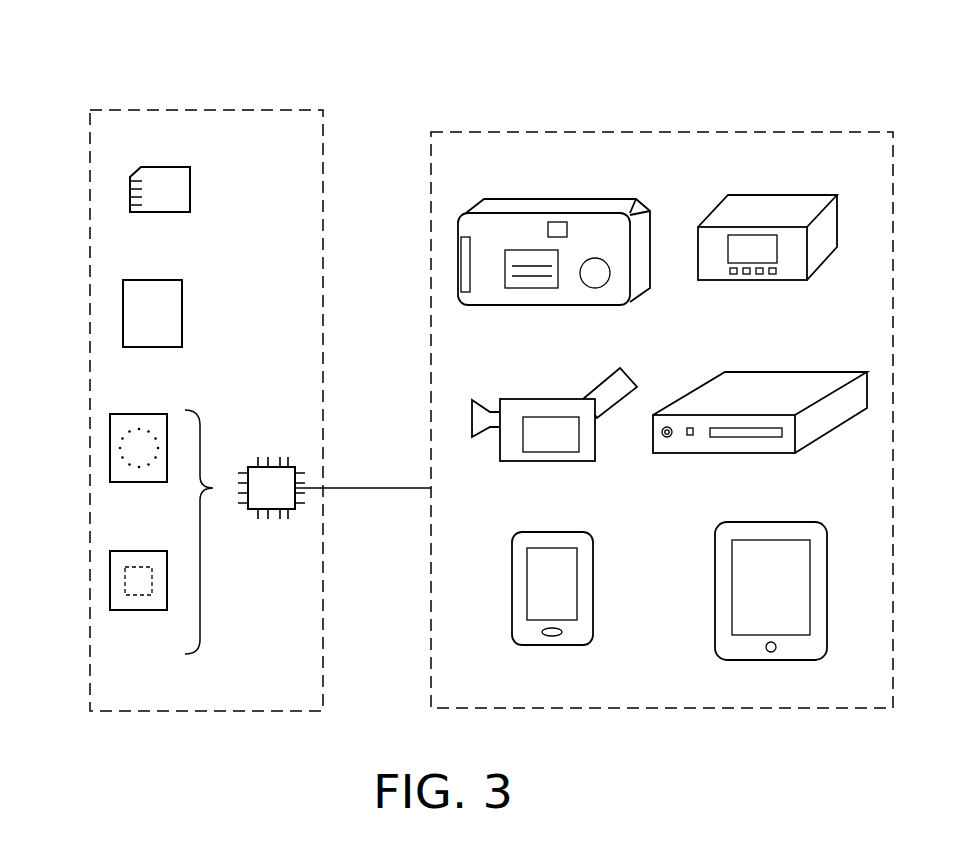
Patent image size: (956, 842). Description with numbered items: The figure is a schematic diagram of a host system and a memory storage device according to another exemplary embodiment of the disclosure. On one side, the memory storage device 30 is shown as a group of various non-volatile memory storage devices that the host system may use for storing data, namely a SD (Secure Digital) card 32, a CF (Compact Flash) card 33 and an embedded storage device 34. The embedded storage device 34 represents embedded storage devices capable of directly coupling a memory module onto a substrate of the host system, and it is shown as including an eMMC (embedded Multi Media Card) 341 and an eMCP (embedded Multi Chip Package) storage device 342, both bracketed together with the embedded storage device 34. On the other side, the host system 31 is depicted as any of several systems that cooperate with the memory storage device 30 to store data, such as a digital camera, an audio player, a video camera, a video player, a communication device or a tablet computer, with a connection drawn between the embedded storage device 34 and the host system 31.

The memory storage device 30 is at (195, 110).
The host system 31 is at (590, 132).
The SD card 32 is at (130, 193).
The CF card 33 is at (123, 313).
The embedded storage device 34 is at (275, 466).
The eMMC 341 is at (110, 450).
The eMCP storage device 342 is at (110, 582).